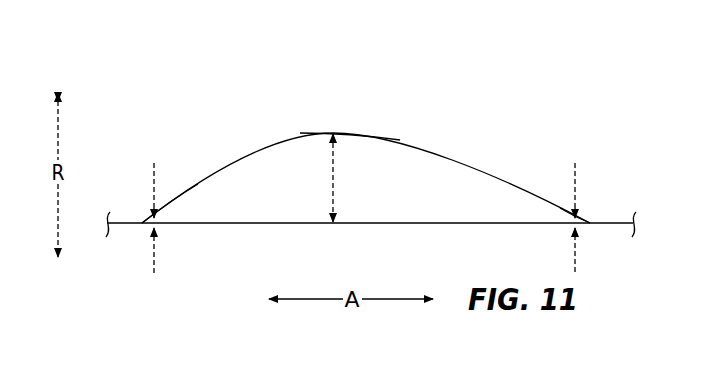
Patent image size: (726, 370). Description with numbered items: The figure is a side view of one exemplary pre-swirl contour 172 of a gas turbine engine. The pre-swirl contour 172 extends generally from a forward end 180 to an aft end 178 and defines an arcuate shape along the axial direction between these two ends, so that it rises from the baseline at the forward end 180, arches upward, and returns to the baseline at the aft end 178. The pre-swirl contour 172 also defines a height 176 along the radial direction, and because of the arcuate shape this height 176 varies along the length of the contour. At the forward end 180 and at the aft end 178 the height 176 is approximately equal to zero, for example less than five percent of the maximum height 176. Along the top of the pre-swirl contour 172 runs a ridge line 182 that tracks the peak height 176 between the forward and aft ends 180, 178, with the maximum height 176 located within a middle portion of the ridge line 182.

The pre-swirl contour 172 is at (396, 111).
The height 176 is at (157, 258).
The aft end 178 is at (598, 204).
The forward end 180 is at (141, 210).
The ridge line 182 is at (452, 158).